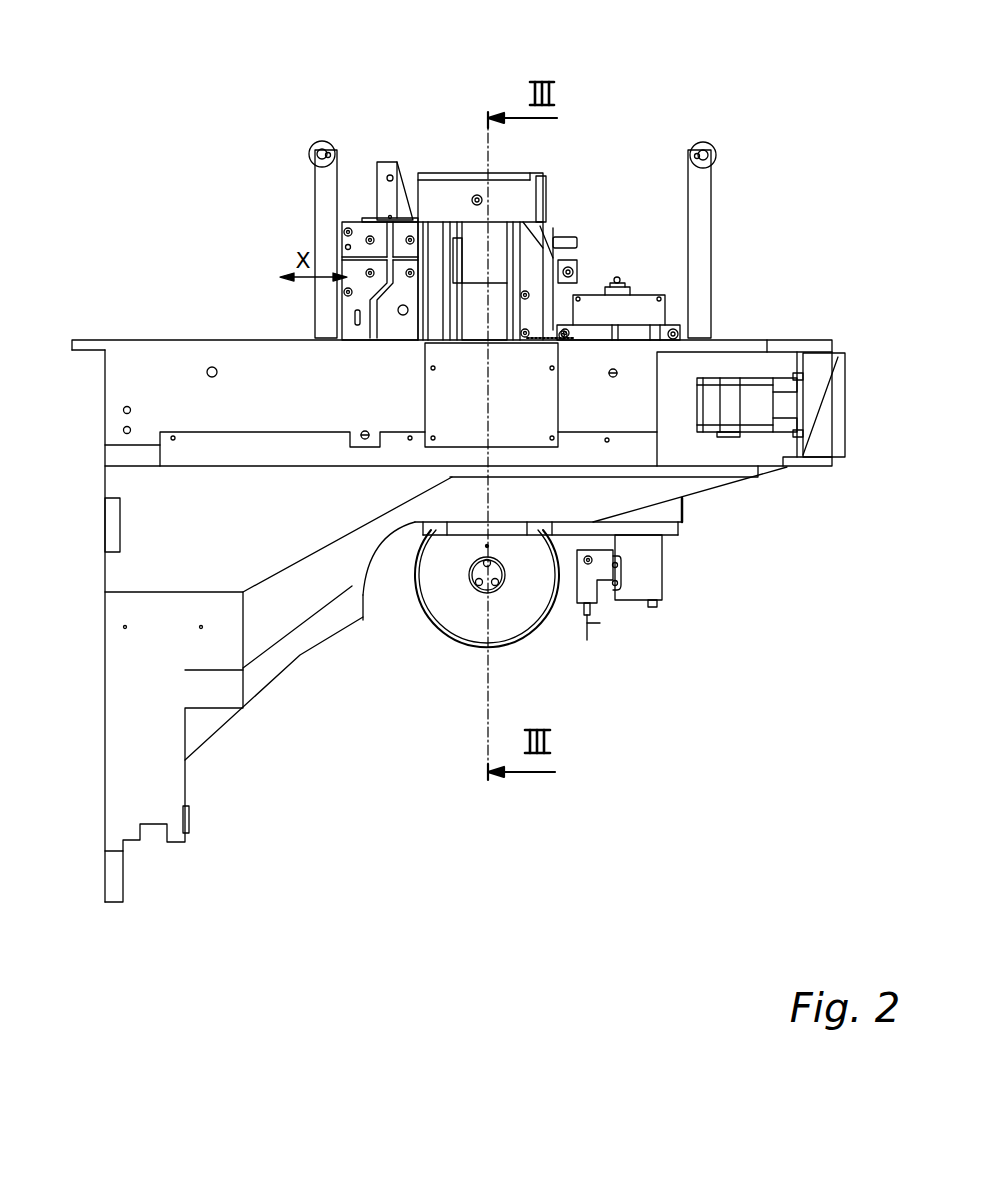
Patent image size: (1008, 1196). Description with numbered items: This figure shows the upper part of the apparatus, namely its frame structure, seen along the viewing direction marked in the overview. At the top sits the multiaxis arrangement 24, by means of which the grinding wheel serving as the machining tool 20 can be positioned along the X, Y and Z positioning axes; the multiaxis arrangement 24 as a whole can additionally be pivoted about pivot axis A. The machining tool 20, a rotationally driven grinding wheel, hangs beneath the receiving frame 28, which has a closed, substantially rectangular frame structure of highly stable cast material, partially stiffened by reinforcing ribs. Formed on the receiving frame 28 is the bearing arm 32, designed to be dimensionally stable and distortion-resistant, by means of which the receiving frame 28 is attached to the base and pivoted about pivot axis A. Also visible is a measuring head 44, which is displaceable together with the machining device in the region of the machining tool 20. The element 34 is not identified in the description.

The machining tool 20 is at (525, 607).
The multiaxis arrangement 24 is at (429, 150).
The receiving frame 28 is at (156, 352).
The bearing arm 32 is at (127, 708).
The support arm with wheel housing 34 is at (280, 550).
The measuring head 44 is at (590, 607).